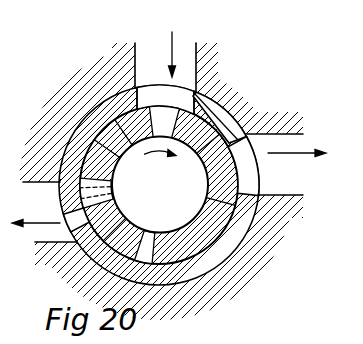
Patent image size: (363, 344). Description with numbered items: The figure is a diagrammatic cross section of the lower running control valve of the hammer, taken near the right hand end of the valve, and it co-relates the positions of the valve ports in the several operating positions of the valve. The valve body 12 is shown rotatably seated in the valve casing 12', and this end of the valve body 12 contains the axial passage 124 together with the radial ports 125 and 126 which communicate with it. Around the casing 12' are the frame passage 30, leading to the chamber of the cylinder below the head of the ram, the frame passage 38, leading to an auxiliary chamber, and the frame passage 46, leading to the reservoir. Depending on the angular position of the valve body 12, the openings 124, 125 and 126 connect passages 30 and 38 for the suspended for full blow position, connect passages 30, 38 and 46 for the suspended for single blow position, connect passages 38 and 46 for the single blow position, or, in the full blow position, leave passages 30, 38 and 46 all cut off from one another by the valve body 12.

The valve body 12 is at (160, 189).
The valve casing 12' is at (232, 100).
The frame passage 30 is at (50, 212).
The frame passage 38 is at (165, 85).
The frame passage 46 is at (277, 165).
The axial passage 124 is at (224, 224).
The radial port 125 is at (127, 236).
The radial port 126 is at (133, 134).